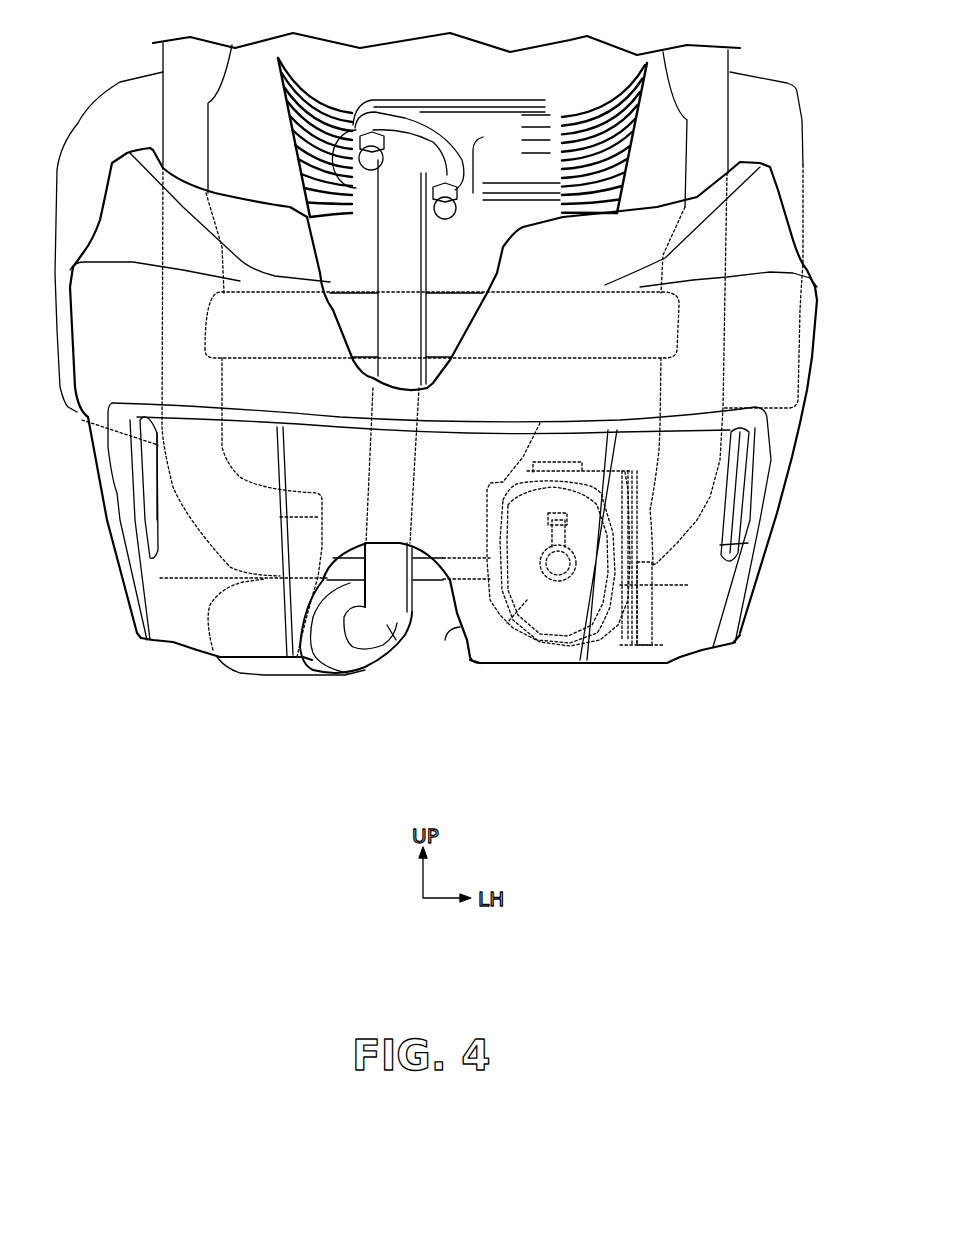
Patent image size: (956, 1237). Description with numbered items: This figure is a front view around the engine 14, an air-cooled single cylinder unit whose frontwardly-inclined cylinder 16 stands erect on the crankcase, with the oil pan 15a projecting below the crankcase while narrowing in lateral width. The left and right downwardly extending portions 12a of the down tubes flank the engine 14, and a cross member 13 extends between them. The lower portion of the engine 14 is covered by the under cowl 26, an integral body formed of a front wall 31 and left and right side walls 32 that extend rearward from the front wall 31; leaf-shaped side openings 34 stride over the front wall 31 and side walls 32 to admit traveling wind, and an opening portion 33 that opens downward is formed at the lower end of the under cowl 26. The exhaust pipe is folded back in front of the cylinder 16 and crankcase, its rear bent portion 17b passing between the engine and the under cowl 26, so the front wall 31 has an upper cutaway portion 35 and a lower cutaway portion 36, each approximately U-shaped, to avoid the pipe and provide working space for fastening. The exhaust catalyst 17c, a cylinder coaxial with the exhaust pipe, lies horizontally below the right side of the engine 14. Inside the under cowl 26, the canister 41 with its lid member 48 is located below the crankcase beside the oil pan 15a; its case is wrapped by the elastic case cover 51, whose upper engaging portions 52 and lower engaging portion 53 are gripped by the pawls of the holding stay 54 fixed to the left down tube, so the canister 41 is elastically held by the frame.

The downwardly extending portion 12a is at (823, 187).
The engine 14 is at (800, 94).
The cylinder 16 is at (625, 135).
The upper cutaway portion 35 is at (340, 300).
The cross member 13 is at (593, 337).
The side wall 32 is at (97, 450).
The side opening 34 is at (155, 533).
The under cowl 26 is at (141, 638).
The exhaust catalyst 17c is at (277, 675).
The oil pan 15a is at (300, 553).
The rear bent portion 17b is at (397, 633).
The front wall 31 is at (446, 540).
The lower cutaway portion 36 is at (445, 640).
The upper engaging portion 52 is at (563, 467).
The lower engaging portion 53 is at (570, 640).
The canister 41 is at (497, 585).
The lid member 48 is at (520, 645).
The case cover 51 is at (613, 647).
The holding stay 54 is at (663, 650).
The opening portion 33 is at (523, 663).